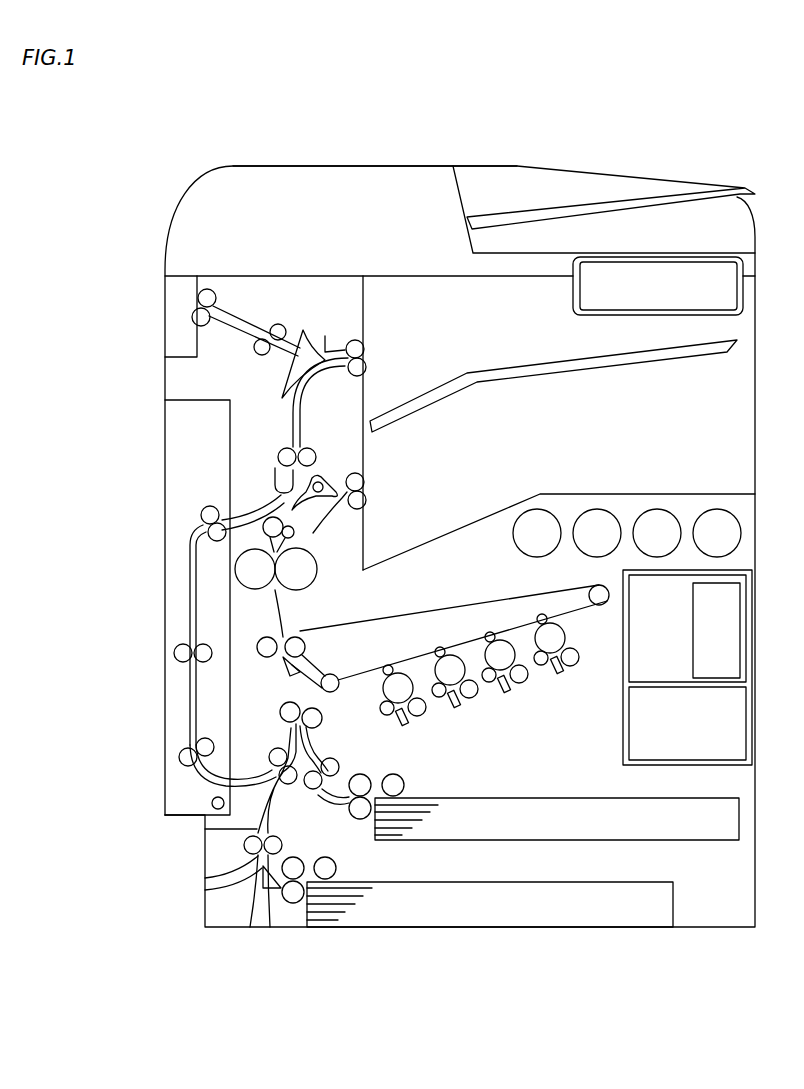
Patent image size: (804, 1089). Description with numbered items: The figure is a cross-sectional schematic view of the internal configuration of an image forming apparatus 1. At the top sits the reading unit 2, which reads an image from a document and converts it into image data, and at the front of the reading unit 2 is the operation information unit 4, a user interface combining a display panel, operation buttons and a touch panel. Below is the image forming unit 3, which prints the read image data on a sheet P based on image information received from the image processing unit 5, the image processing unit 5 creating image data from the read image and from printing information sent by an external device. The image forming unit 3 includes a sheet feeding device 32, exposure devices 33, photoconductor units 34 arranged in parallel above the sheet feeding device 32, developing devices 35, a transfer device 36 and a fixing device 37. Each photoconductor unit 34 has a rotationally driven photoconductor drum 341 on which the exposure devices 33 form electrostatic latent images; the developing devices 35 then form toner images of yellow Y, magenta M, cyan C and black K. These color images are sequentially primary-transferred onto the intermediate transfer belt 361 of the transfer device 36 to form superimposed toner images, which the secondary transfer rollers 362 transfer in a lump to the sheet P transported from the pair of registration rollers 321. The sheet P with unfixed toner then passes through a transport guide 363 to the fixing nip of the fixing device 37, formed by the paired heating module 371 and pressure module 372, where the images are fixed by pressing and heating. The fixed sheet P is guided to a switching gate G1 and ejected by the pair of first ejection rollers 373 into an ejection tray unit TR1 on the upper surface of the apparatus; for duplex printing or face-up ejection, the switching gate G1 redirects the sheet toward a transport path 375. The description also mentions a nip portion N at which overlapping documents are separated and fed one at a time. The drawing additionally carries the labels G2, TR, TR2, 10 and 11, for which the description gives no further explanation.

The image forming apparatus 1 is at (176, 165).
The reading unit 2 is at (319, 238).
The image forming unit 3 is at (500, 678).
The operation information unit 4 is at (651, 299).
The image processing unit 5 is at (683, 738).
The controller 10 is at (687, 628).
The memory 11 is at (704, 643).
The sheet feeding device 32 is at (406, 773).
The exposure device 33 is at (560, 675).
The photoconductor unit 34 is at (571, 678).
The developing device 35 is at (578, 664).
The transfer device 36 is at (454, 617).
The fixing device 37 is at (327, 548).
The registration rollers 321 is at (318, 720).
The photoconductor drum 341 is at (566, 637).
The intermediate transfer belt 361 is at (432, 607).
The secondary transfer rollers 362 is at (273, 659).
The transport guide 363 is at (283, 604).
The heating module 371 is at (304, 587).
The pressure module 372 is at (256, 590).
The first ejection rollers 373 is at (368, 494).
The transport path 375 is at (286, 427).
The switching gate G1 is at (316, 498).
The second switching gate G2 is at (327, 336).
The nip portion N is at (274, 554).
The secondary transfer position TR is at (285, 661).
The ejection tray unit TR1 is at (500, 507).
The second output tray TR2 is at (465, 371).
The sheet P is at (523, 862).
The black K is at (537, 533).
The cyan C is at (597, 533).
The magenta M is at (657, 533).
The yellow Y is at (717, 533).